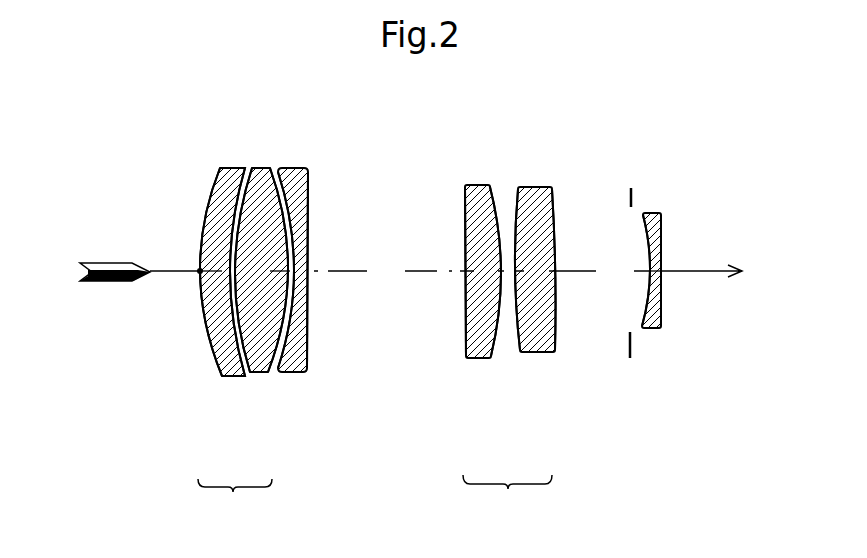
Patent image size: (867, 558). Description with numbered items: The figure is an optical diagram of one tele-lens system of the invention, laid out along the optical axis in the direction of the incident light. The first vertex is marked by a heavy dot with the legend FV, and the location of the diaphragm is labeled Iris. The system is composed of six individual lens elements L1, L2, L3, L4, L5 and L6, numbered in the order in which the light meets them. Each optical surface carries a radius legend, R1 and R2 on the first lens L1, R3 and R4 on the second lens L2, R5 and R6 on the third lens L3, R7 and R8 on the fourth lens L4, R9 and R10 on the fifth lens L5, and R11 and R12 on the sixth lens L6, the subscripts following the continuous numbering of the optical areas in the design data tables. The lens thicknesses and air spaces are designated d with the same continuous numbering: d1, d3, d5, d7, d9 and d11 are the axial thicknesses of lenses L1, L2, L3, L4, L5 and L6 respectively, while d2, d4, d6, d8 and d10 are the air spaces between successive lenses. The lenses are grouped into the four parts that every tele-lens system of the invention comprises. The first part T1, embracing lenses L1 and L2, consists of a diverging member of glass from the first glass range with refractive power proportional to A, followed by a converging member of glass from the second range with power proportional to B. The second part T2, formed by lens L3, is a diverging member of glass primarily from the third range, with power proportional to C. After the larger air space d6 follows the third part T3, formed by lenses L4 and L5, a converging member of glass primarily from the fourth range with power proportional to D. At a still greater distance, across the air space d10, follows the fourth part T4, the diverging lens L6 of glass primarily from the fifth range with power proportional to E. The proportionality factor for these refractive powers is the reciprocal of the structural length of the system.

The first vertex FV is at (198, 272).
The first lens element L1 is at (233, 376).
The second lens element L2 is at (260, 372).
The third lens element L3 is at (290, 372).
The fourth lens element L4 is at (478, 358).
The fifth lens element L5 is at (537, 352).
The sixth lens element L6 is at (652, 328).
The radius of first optical area R1 is at (212, 194).
The radius of second optical area R2 is at (243, 166).
The radius of third optical area R3 is at (251, 166).
The radius of fourth optical area R4 is at (274, 170).
The radius of fifth optical area R5 is at (282, 166).
The radius of sixth optical area R6 is at (307, 184).
The radius of seventh optical area R7 is at (462, 207).
The radius of eighth optical area R8 is at (497, 186).
The radius of ninth optical area R9 is at (515, 190).
The radius of tenth optical area R10 is at (555, 216).
The radius of eleventh optical area R11 is at (645, 217).
The radius of twelfth optical area R12 is at (661, 221).
The thickness of first lens d1 is at (205, 262).
The air space between first and second lenses d2 is at (208, 278).
The thickness of second lens d3 is at (266, 276).
The air space between second and third lenses d4 is at (289, 276).
The thickness of third lens d5 is at (294, 270).
The air space between third and fourth lenses d6 is at (389, 276).
The thickness of fourth lens d7 is at (485, 277).
The air space between fourth and fifth lenses d8 is at (508, 275).
The thickness of fifth lens d9 is at (535, 277).
The air space between fifth and sixth lenses d10 is at (603, 277).
The thickness of sixth lens d11 is at (660, 260).
The first part T1 is at (233, 494).
The second part T2 is at (309, 485).
The third part T3 is at (508, 493).
The fourth part T4 is at (652, 450).
The diaphragm location Iris is at (627, 347).